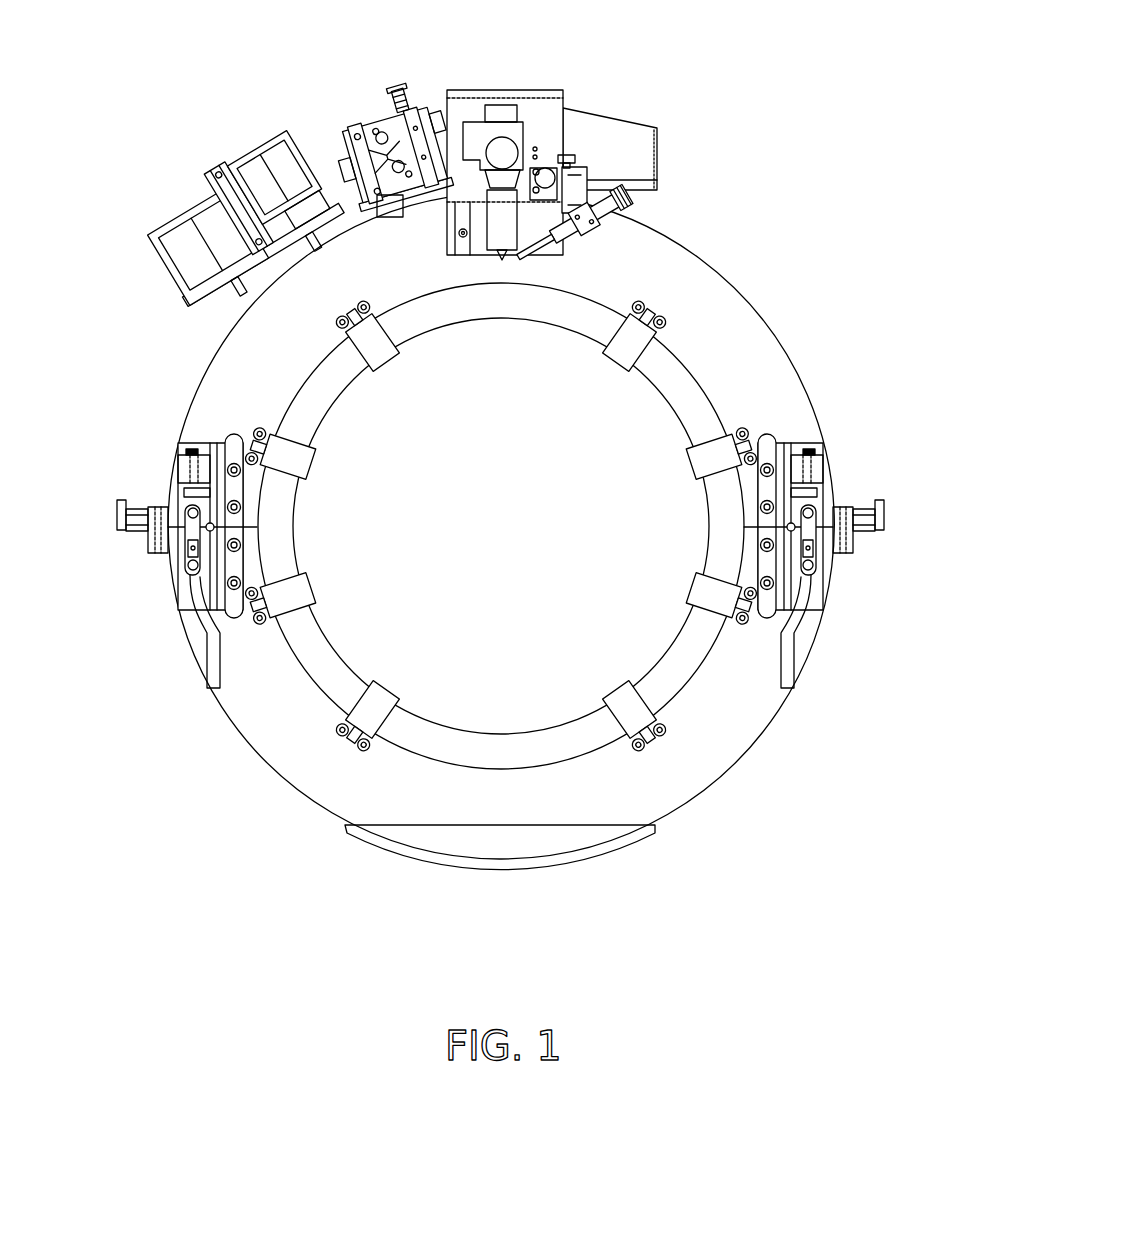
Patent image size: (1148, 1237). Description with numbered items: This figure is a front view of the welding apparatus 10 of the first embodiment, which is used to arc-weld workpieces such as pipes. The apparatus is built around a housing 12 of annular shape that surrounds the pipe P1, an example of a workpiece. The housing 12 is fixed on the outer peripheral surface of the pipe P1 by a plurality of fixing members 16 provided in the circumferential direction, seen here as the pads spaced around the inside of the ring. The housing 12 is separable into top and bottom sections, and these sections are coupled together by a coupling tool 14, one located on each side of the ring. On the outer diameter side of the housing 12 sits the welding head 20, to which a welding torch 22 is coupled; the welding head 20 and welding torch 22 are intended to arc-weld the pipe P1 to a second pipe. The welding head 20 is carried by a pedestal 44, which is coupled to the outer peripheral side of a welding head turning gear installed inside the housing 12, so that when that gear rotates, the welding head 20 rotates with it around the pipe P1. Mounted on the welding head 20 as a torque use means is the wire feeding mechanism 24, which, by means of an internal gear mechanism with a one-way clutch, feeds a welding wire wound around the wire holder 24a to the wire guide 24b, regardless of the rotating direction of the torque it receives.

The welding apparatus 10 is at (503, 475).
The housing 12 is at (733, 744).
The coupling tool 14 is at (846, 482).
The fixing member 16 is at (645, 352).
The welding head 20 is at (426, 171).
The welding torch 22 is at (475, 130).
The wire feeding mechanism 24 is at (395, 135).
The wire holder 24a is at (207, 222).
The wire guide 24b is at (600, 187).
The pedestal 44 is at (400, 200).
The pipe P1 is at (636, 320).